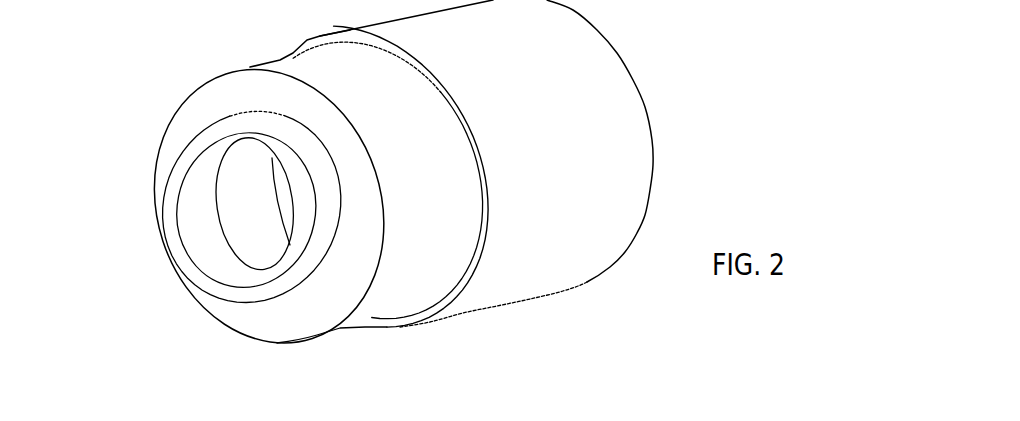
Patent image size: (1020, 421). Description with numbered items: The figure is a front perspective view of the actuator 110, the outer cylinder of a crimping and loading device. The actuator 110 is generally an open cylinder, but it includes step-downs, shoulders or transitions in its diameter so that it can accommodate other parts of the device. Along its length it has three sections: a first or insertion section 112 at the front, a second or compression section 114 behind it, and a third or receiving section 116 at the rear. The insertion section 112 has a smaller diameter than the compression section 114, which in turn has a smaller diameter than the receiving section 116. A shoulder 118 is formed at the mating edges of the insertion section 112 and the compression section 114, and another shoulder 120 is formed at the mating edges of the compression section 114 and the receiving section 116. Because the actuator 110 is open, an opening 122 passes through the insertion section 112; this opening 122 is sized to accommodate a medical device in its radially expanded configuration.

The actuator 110 is at (602, 318).
The insertion section 112 is at (260, 122).
The compression section 114 is at (410, 287).
The receiving section 116 is at (594, 145).
The shoulder 118 is at (328, 298).
The shoulder 120 is at (455, 288).
The opening 122 is at (207, 235).